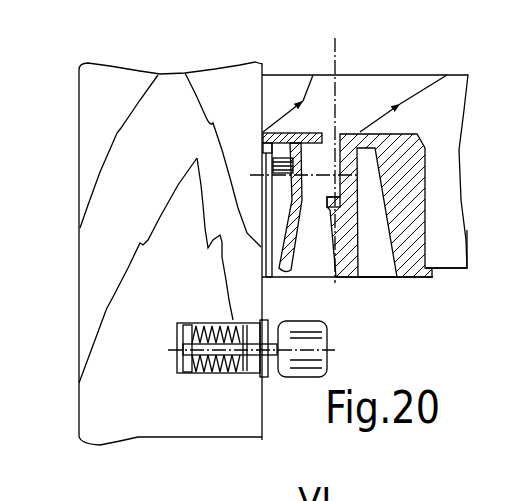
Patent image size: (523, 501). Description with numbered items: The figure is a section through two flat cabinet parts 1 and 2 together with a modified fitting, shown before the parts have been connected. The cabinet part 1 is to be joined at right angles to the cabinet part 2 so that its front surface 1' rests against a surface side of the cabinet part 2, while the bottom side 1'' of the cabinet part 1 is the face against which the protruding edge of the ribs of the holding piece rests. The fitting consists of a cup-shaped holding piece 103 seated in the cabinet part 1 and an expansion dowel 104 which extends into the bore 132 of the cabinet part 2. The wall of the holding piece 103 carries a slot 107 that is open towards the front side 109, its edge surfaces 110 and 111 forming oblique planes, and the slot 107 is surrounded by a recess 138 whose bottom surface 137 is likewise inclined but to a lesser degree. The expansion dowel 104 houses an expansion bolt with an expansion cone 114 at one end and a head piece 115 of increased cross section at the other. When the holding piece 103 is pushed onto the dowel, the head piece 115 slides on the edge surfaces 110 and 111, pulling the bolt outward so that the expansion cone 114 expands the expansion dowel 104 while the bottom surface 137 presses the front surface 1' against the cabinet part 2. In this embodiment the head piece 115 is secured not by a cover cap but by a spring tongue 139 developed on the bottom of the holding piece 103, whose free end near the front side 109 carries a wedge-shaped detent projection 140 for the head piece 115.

The cabinet part 1 is at (365, 144).
The front surface 1' is at (249, 223).
The bottom side 1'' is at (452, 279).
The cabinet part 2 is at (76, 342).
The holding piece 103 is at (411, 131).
The expansion dowel 104 is at (195, 378).
The slot 107 is at (280, 215).
The front side 109 is at (415, 278).
The edge surface 110 is at (300, 240).
The edge surface 111 is at (303, 235).
The expansion cone 114 is at (190, 329).
The head piece 115 is at (298, 378).
The bore 132 is at (247, 377).
The bottom surface 137 is at (264, 258).
The recess 138 is at (263, 148).
The spring tongue 139 is at (357, 213).
The detent projection 140 is at (350, 257).